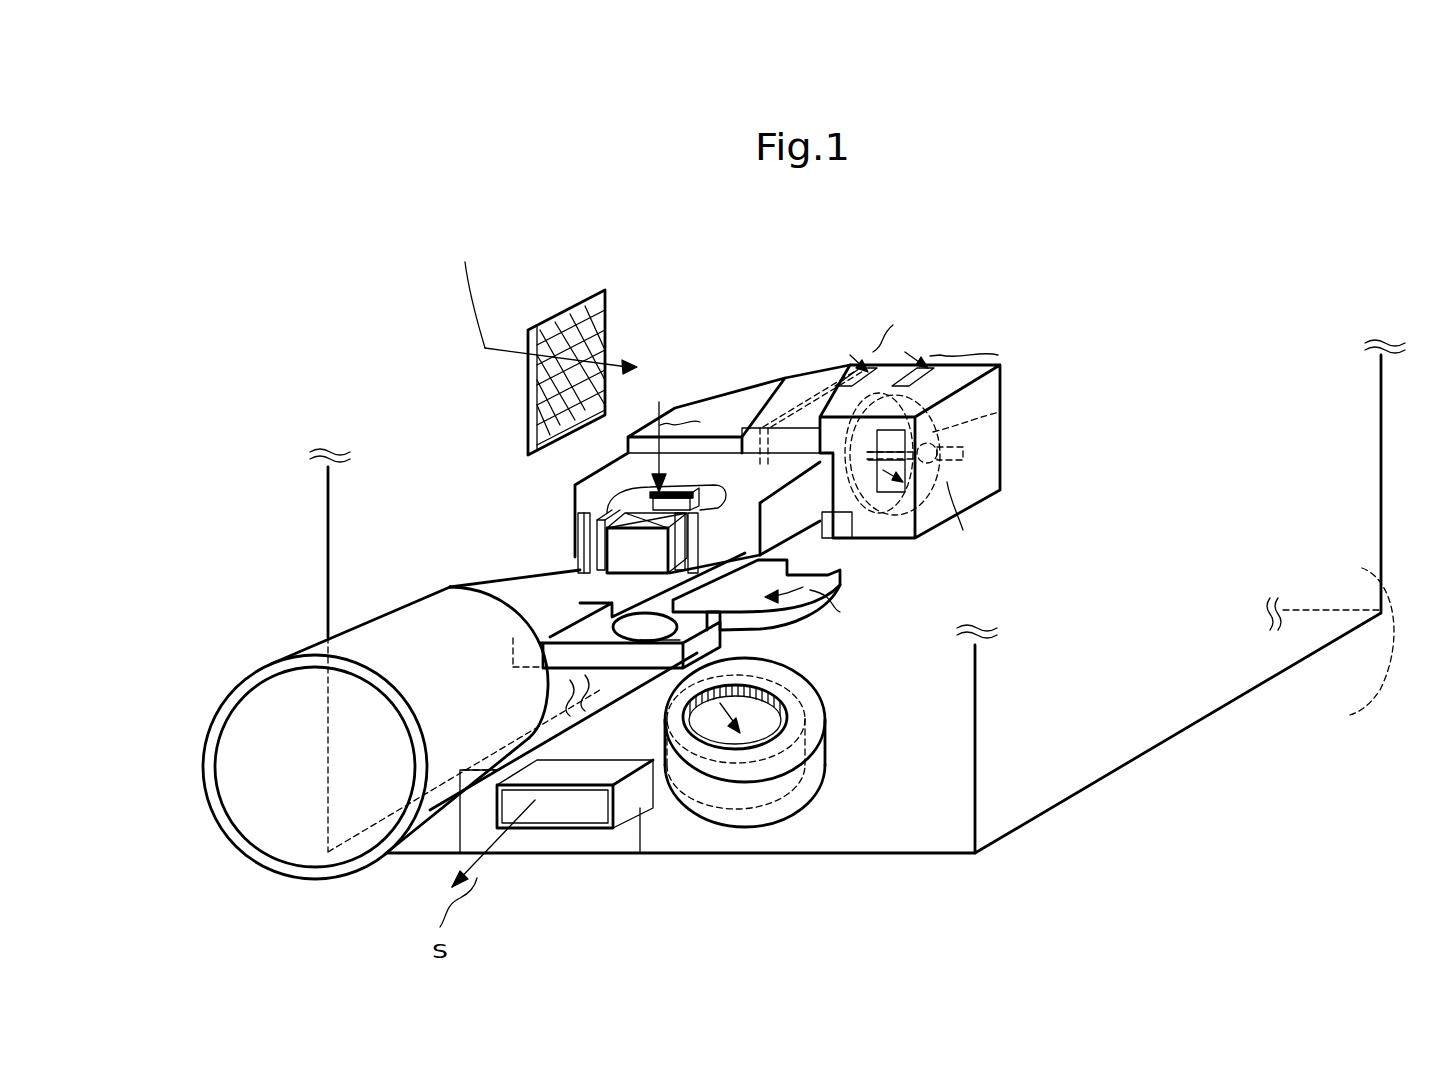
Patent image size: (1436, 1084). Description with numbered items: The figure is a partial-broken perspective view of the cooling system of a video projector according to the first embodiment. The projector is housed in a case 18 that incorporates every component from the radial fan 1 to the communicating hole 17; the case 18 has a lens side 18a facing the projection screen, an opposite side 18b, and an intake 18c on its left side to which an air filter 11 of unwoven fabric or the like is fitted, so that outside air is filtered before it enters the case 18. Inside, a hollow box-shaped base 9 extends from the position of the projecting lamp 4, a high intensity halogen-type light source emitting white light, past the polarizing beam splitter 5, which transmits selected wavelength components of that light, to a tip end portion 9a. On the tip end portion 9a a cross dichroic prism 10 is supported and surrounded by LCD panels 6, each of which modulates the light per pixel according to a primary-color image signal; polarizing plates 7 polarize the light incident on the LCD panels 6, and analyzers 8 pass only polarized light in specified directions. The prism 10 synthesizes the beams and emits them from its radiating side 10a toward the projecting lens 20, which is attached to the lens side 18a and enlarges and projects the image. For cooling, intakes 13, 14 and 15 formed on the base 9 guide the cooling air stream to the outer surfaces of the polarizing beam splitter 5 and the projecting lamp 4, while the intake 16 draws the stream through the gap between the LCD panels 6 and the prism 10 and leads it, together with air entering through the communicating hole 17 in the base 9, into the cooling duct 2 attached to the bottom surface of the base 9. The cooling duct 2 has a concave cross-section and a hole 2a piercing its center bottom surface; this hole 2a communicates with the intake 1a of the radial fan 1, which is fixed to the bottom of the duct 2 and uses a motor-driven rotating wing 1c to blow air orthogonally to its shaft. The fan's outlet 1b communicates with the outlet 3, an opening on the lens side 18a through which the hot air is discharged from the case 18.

The radial fan 1 is at (790, 808).
The intake 1a is at (782, 732).
The outlet 1b is at (563, 810).
The rotating wing 1c is at (713, 822).
The cooling duct 2 is at (811, 634).
The hole 2a is at (710, 635).
The outlet 3 is at (558, 863).
The projecting lamp 4 is at (940, 420).
The polarizing beam splitter 5 is at (792, 378).
The LCD panels 6 is at (728, 548).
The polarizing plates 7 is at (744, 476).
The analyzers 8 is at (760, 513).
The base 9 is at (702, 552).
The tip end portion 9a is at (513, 465).
The cross dichroic prism 10 is at (640, 560).
The radiating side 10a is at (540, 600).
The air filter 11 is at (575, 310).
The intake 13 is at (853, 362).
The intake 14 is at (913, 365).
The intake 15 is at (895, 490).
The intake 16 is at (650, 488).
The communicating hole 17 is at (845, 522).
The case 18 is at (1052, 762).
The lens side 18a is at (942, 806).
The opposite side 18b is at (1355, 664).
The intake 18c is at (582, 300).
The projecting lens 20 is at (285, 640).